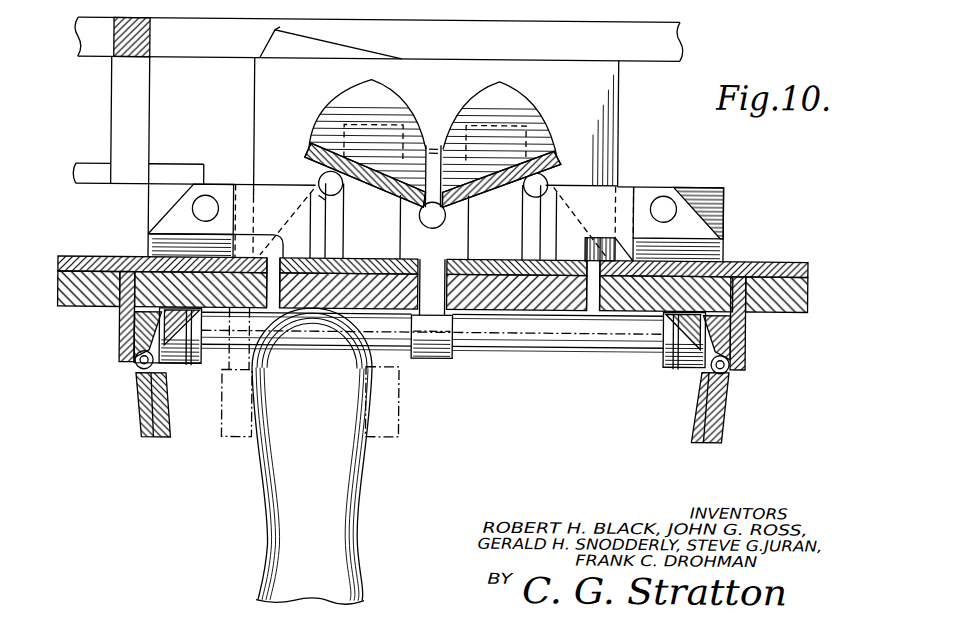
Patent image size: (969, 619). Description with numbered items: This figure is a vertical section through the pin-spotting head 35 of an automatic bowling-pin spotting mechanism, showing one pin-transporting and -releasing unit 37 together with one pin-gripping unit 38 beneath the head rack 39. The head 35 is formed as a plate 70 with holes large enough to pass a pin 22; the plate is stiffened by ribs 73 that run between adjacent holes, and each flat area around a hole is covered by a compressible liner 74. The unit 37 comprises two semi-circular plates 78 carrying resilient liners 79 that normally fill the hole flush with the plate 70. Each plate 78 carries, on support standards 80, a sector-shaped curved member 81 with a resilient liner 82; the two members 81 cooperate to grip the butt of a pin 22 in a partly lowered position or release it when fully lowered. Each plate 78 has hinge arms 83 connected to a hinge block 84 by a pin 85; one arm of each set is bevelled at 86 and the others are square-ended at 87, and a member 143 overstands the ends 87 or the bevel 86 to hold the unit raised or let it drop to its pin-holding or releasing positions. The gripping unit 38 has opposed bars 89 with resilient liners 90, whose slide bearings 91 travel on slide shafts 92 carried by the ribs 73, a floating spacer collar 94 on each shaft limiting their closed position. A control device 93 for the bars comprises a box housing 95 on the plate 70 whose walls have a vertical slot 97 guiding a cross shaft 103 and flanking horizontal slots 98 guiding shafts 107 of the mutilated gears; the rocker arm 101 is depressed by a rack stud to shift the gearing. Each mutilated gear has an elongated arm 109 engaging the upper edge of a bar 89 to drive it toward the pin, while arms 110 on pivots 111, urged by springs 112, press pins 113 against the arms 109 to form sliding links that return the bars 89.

The pins 22 is at (358, 470).
The pin-spotting head 35 is at (801, 257).
The pin-transporting and -releasing units 37 is at (549, 104).
The pin-gripping units 38 is at (129, 428).
The head rack 39 is at (614, 8).
The plate 70 is at (105, 255).
The ribs 73 is at (121, 312).
The liner 74 is at (197, 254).
The semi-circular plates 78 is at (380, 255).
The resilient liners 79 is at (326, 311).
The support standards 80 is at (467, 223).
The sector-shaped member 81 is at (556, 182).
The resilient liner 82 is at (400, 126).
The hinge arms 83 is at (262, 193).
The hinge block 84 is at (150, 205).
The pin 85 is at (665, 192).
The bevel 86 is at (695, 194).
The square ends 87 is at (325, 170).
The bars 89 is at (145, 438).
The resilient liners 90 is at (170, 436).
The slide bearings 91 is at (188, 365).
The slide shafts 92 is at (558, 337).
The control devices 93 is at (626, 110).
The floating spacer collar 94 is at (303, 366).
The box housing 95 is at (260, 103).
The central vertical slot 97 is at (467, 135).
The horizontal slots 98 is at (313, 179).
The arm 101 is at (268, 38).
The cross shaft 103 is at (420, 211).
The shafts 107 is at (318, 193).
The elongated arm 109 is at (628, 252).
The arms 110 is at (195, 367).
The pivots 111 is at (138, 371).
The springs 112 is at (737, 346).
The pins 113 is at (734, 256).
The member 143 is at (184, 170).